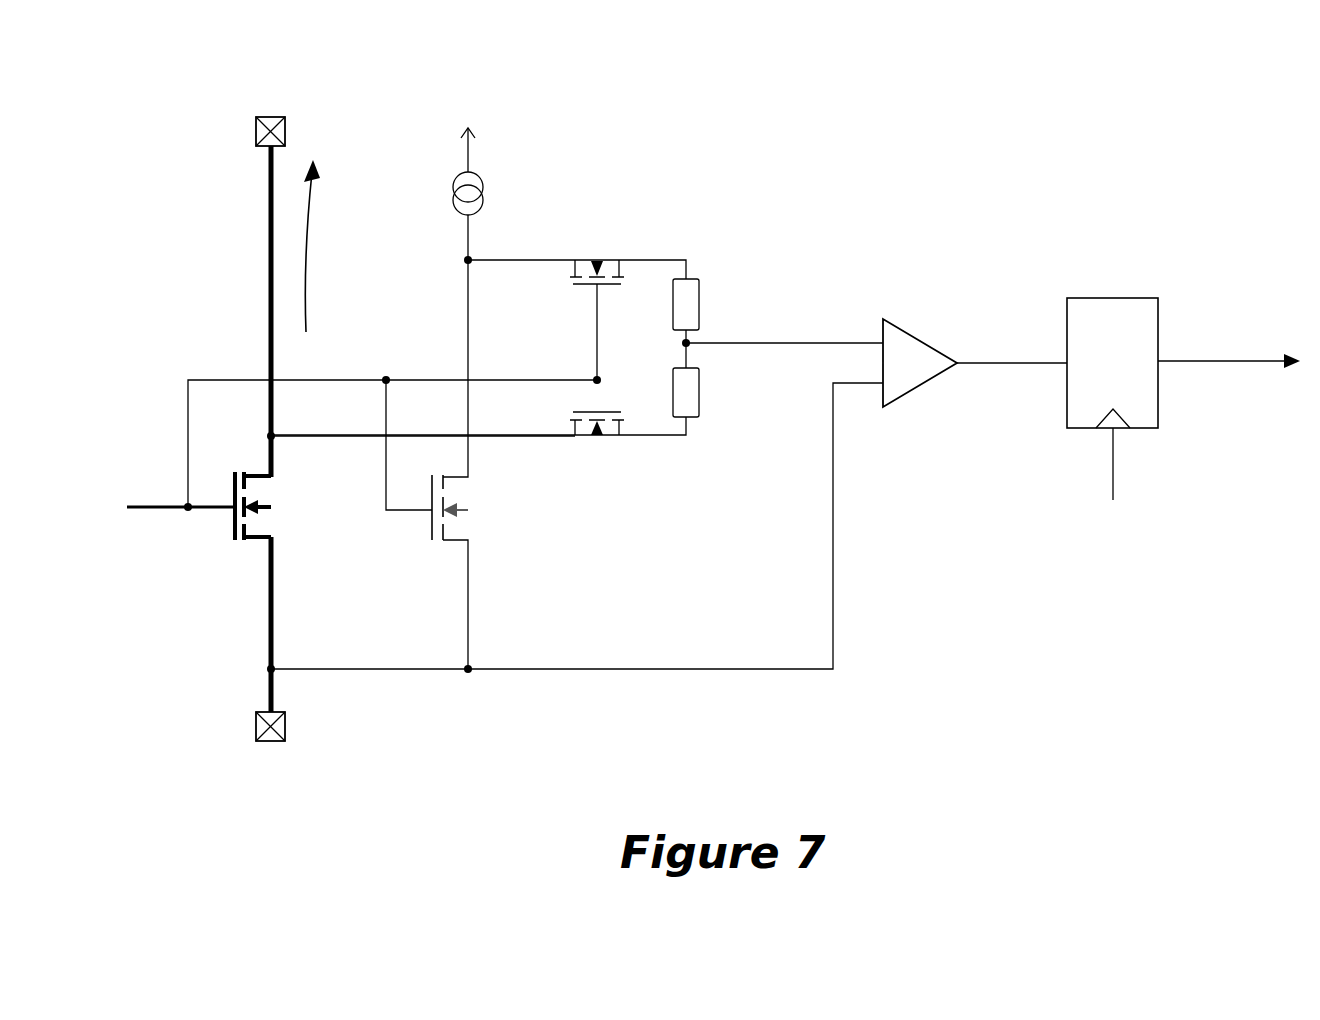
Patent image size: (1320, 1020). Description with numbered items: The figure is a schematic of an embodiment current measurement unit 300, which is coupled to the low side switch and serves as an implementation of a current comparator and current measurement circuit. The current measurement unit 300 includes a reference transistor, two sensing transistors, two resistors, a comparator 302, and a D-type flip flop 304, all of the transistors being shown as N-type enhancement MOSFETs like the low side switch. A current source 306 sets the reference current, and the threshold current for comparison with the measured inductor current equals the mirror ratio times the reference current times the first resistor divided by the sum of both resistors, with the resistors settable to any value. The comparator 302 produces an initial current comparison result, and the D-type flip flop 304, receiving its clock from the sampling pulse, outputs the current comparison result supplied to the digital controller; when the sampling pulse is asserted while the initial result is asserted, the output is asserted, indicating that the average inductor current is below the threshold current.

The current measurement unit 300 is at (1250, 92).
The comparator 302 is at (920, 392).
The D-type flip flop 304 is at (1115, 298).
The current source 306 is at (484, 178).